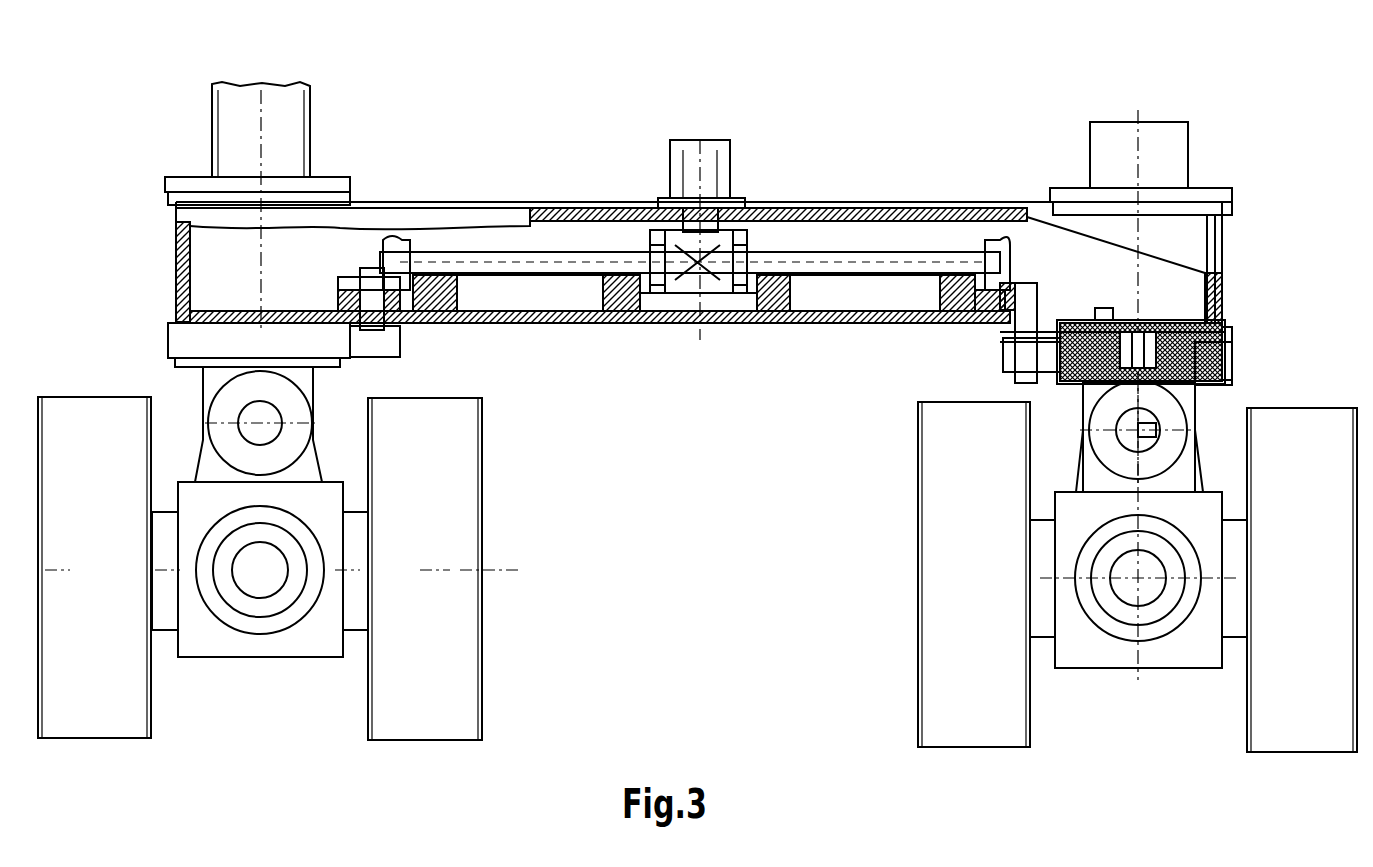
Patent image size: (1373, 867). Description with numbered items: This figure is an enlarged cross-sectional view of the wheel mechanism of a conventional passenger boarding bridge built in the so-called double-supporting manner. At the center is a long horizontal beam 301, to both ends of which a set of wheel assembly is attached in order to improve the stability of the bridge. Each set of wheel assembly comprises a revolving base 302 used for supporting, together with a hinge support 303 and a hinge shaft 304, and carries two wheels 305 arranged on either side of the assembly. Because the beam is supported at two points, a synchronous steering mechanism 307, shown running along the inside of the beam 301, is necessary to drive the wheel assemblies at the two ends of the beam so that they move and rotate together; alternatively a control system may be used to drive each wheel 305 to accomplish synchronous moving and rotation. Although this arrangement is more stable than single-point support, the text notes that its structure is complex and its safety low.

The beam 301 is at (872, 208).
The revolving base 302 is at (1190, 312).
The hinge support 303 is at (1232, 375).
The hinge shaft 304 is at (1190, 418).
The wheel 305 is at (1283, 722).
The synchronous steering mechanism 307 is at (515, 262).